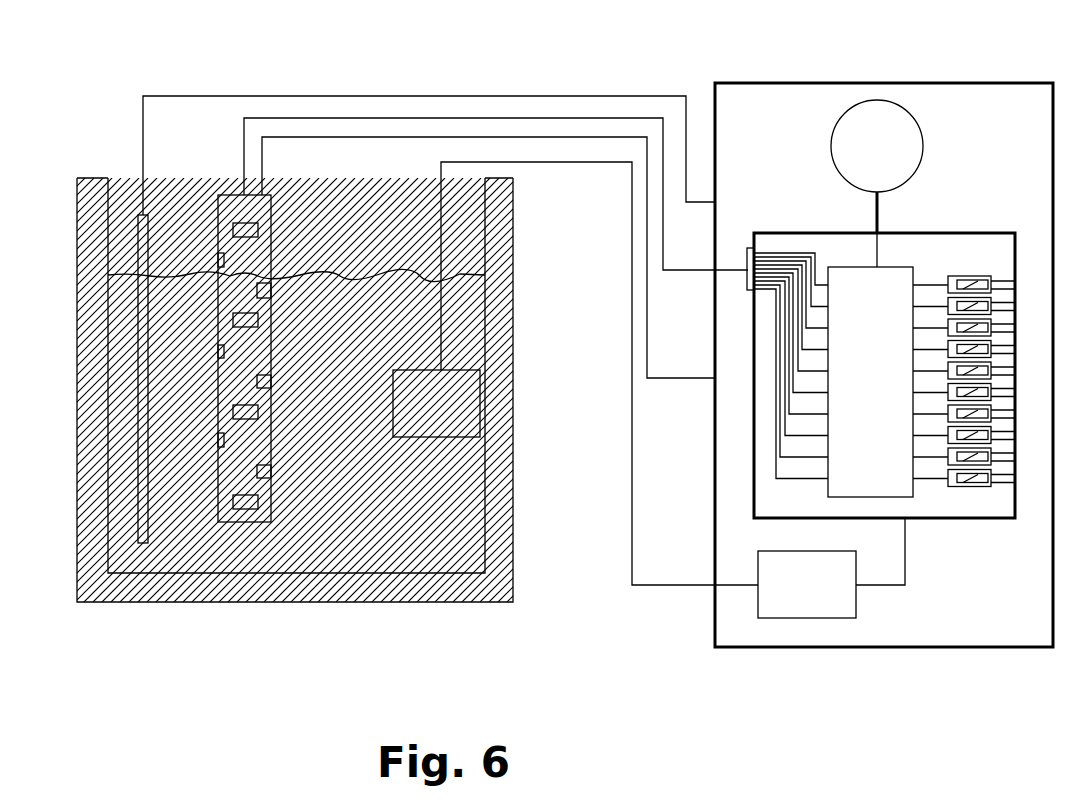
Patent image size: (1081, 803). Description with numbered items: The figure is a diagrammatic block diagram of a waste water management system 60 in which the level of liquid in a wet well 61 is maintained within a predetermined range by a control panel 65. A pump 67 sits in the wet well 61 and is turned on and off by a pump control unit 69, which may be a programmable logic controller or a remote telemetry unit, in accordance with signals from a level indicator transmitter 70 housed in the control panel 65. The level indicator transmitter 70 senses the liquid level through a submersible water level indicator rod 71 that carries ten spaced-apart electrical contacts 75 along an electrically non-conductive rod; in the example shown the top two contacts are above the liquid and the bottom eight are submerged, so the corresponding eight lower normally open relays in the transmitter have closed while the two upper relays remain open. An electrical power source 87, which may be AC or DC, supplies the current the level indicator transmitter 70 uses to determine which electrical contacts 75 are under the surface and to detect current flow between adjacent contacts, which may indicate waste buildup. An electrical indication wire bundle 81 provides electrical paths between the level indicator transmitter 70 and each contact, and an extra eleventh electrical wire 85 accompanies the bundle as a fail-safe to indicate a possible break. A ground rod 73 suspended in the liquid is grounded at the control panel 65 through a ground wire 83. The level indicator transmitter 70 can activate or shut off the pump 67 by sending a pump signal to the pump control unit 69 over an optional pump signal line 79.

The waste water management system 60 is at (532, 29).
The wet well 61 is at (212, 603).
The control panel 65 is at (768, 82).
The pump 67 is at (418, 368).
The pump control unit 69 is at (830, 618).
The level indicator transmitter 70 is at (945, 233).
The water level indicator rod 71 is at (248, 364).
The ground rod 73 is at (150, 505).
The electrical contacts 75 is at (258, 228).
The pump signal line 79 is at (905, 543).
The electrical indication wire bundle 81 is at (242, 144).
The ground wire 83 is at (183, 92).
The eleventh electrical wire 85 is at (347, 138).
The electrical power source 87 is at (832, 152).